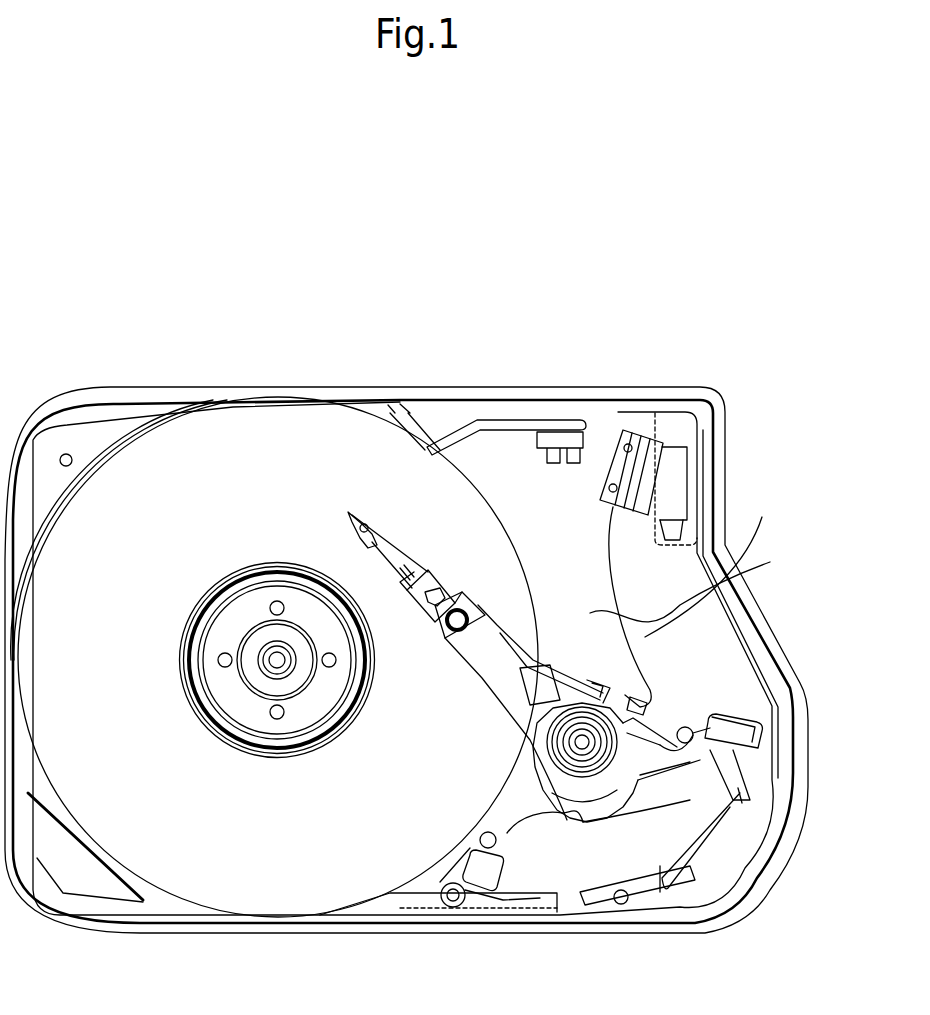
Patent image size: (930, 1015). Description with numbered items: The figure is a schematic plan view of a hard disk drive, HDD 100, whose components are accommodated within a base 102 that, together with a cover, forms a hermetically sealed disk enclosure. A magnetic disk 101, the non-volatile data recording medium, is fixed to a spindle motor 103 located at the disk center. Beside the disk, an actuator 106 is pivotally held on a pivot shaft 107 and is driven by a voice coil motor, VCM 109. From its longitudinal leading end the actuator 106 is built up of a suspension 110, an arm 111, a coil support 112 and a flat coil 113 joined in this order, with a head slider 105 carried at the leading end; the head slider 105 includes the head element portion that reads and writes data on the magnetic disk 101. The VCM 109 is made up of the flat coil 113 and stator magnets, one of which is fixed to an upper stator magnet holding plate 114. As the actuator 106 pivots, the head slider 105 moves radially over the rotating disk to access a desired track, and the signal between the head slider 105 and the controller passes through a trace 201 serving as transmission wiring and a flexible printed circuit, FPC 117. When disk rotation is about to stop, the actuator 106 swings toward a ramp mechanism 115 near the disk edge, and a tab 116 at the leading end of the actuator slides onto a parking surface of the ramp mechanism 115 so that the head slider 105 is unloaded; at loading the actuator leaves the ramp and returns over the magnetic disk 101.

The HDD 100 is at (399, 372).
The magnetic disk 101 is at (228, 435).
The base 102 is at (717, 445).
The spindle motor 103 is at (250, 718).
The head slider 105 is at (366, 548).
The actuator 106 is at (567, 606).
The pivot shaft 107 is at (582, 742).
The VCM (voice coil motor) 109 is at (737, 838).
The suspension 110 is at (422, 511).
The arm 111 is at (476, 683).
The coil support 112 is at (717, 723).
The flat coil 113 is at (640, 752).
The upper stator magnet holding plate 114 is at (585, 885).
The ramp mechanism 115 is at (563, 432).
The tab 116 is at (362, 527).
The FPC (flexible printed circuit) 117 is at (715, 582).
The trace 201 is at (712, 563).